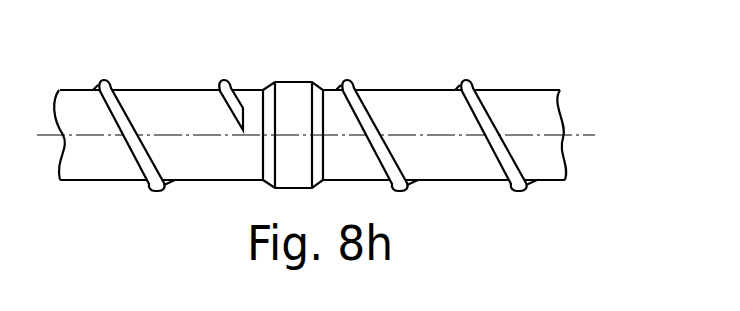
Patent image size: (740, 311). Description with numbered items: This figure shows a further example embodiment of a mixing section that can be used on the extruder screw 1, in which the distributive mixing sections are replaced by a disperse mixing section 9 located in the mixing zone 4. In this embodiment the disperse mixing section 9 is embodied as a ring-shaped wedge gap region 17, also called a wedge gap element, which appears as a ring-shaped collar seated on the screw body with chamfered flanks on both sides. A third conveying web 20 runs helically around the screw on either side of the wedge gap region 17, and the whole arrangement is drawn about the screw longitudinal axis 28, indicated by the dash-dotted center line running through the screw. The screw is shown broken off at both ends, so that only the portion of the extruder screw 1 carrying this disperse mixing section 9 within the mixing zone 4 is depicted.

The extruder screw 1 is at (335, 148).
The mixing zone 4 is at (335, 148).
The disperse mixing section 9 is at (315, 95).
The wedge gap region 17 is at (288, 104).
The third conveying web 20 is at (116, 100).
The screw longitudinal axis 28 is at (576, 135).